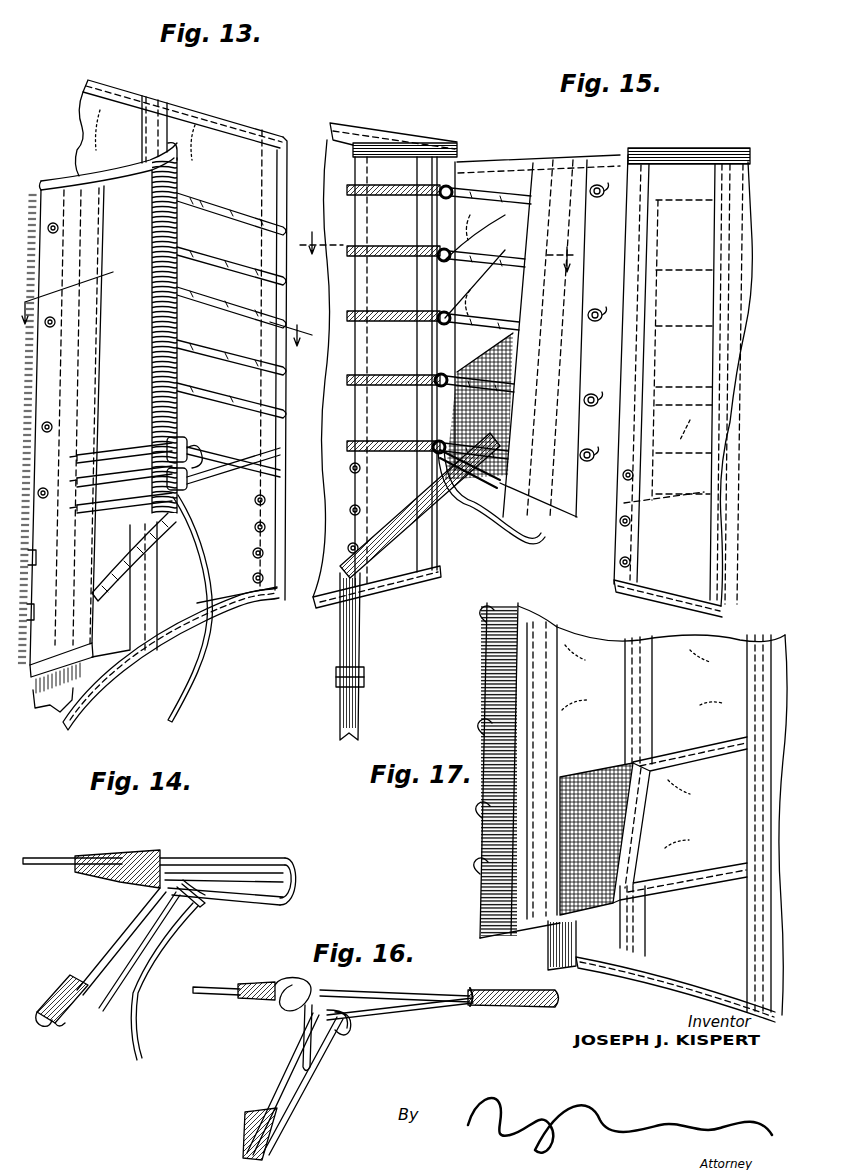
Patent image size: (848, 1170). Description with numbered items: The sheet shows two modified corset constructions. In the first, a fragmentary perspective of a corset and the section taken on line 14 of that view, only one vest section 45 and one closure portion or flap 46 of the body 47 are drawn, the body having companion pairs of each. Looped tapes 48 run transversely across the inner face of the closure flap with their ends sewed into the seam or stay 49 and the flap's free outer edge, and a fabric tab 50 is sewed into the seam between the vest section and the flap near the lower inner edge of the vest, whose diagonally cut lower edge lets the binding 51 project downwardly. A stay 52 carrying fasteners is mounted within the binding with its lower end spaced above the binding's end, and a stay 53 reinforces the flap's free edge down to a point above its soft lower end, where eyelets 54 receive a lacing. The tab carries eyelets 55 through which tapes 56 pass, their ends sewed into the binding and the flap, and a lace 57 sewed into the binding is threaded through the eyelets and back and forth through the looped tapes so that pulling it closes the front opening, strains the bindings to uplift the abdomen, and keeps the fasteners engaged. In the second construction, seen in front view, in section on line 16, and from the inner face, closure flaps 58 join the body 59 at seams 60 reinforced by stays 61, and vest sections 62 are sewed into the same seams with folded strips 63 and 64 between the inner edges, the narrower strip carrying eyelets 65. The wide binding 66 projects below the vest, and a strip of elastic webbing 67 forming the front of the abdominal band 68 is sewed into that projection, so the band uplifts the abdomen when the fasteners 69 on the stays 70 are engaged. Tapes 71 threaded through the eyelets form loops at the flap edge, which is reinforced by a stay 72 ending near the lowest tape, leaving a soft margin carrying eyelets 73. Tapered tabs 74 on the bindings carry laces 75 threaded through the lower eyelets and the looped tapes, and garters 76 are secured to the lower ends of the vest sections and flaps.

In FIG. 13, the section line 14- 14 is at (165, 309).
In FIG. 15, the section line 16- 16 is at (439, 243).
In FIG. 13, the vest section 45 is at (121, 173).
In FIG. 14, the vest section 45 is at (110, 937).
In FIG. 13, the closure portion or flap 46 is at (238, 158).
In FIG. 14, the closure portion or flap 46 is at (230, 858).
In FIG. 13, the body 47 is at (122, 114).
In FIG. 14, the body 47 is at (42, 857).
In FIG. 13, the looped tapes 48 is at (222, 252).
In FIG. 14, the looped tapes 48 is at (258, 898).
In FIG. 13, the seam or stay 49 is at (147, 153).
In FIG. 14, the seam or stay 49 is at (125, 875).
In FIG. 13, the tab 50 is at (200, 450).
In FIG. 14, the tab 50 is at (200, 895).
In FIG. 13, the binding 51 is at (78, 200).
In FIG. 14, the binding 51 is at (62, 983).
In FIG. 13, the stay 52 is at (47, 460).
In FIG. 14, the stay 52 is at (45, 1010).
In FIG. 13, the stay 53 is at (263, 463).
In FIG. 14, the stay 53 is at (280, 858).
In FIG. 13, the eyelets 54 is at (267, 500).
In FIG. 13, the eyelets 55 is at (176, 437).
In FIG. 14, the eyelets 55 is at (182, 907).
In FIG. 13, the tapes 56 is at (100, 510).
In FIG. 14, the tapes 56 is at (105, 1010).
In FIG. 13, the lace 57 is at (205, 562).
In FIG. 14, the lace 57 is at (160, 962).
In FIG. 15, the closure portions or flaps 58 is at (390, 170).
In FIG. 17, the closure portions or flaps 58 is at (585, 942).
In FIG. 16, the closure portions or flaps 58 is at (432, 992).
In FIG. 15, the body 59 is at (343, 143).
In FIG. 17, the body 59 is at (725, 645).
In FIG. 16, the body 59 is at (220, 995).
In FIG. 17, the seams 60 is at (640, 670).
In FIG. 16, the seams 60 is at (280, 1010).
In FIG. 16, the stays 61 is at (285, 985).
In FIG. 15, the vest sections 62 is at (490, 180).
In FIG. 17, the vest sections 62 is at (560, 645).
In FIG. 15, the strip 63 is at (417, 210).
In FIG. 16, the strip 63 is at (300, 1045).
In FIG. 15, the strip 64 is at (440, 228).
In FIG. 16, the strip 64 is at (345, 1035).
In FIG. 15, the eyelets 65 is at (448, 188).
In FIG. 16, the eyelets 65 is at (360, 1018).
In FIG. 15, the binding 66 is at (603, 158).
In FIG. 17, the binding 66 is at (510, 660).
In FIG. 16, the binding 66 is at (275, 1075).
In FIG. 17, the strip of elastic webbing 67 is at (590, 773).
In FIG. 15, the abdominal band 68 is at (513, 373).
In FIG. 17, the abdominal band 68 is at (680, 775).
In FIG. 15, the fasteners 69 is at (600, 310).
In FIG. 17, the fasteners 69 is at (482, 628).
In FIG. 16, the stays 70 is at (512, 990).
In FIG. 15, the tapes 71 is at (470, 313).
In FIG. 16, the tapes 71 is at (300, 1108).
In FIG. 15, the stay 72 is at (357, 287).
In FIG. 16, the stay 72 is at (243, 1128).
In FIG. 15, the eyelets 73 is at (362, 508).
In FIG. 15, the tabs 74 is at (507, 433).
In FIG. 15, the laces 75 is at (728, 434).
In FIG. 15, the garters 76 is at (352, 618).